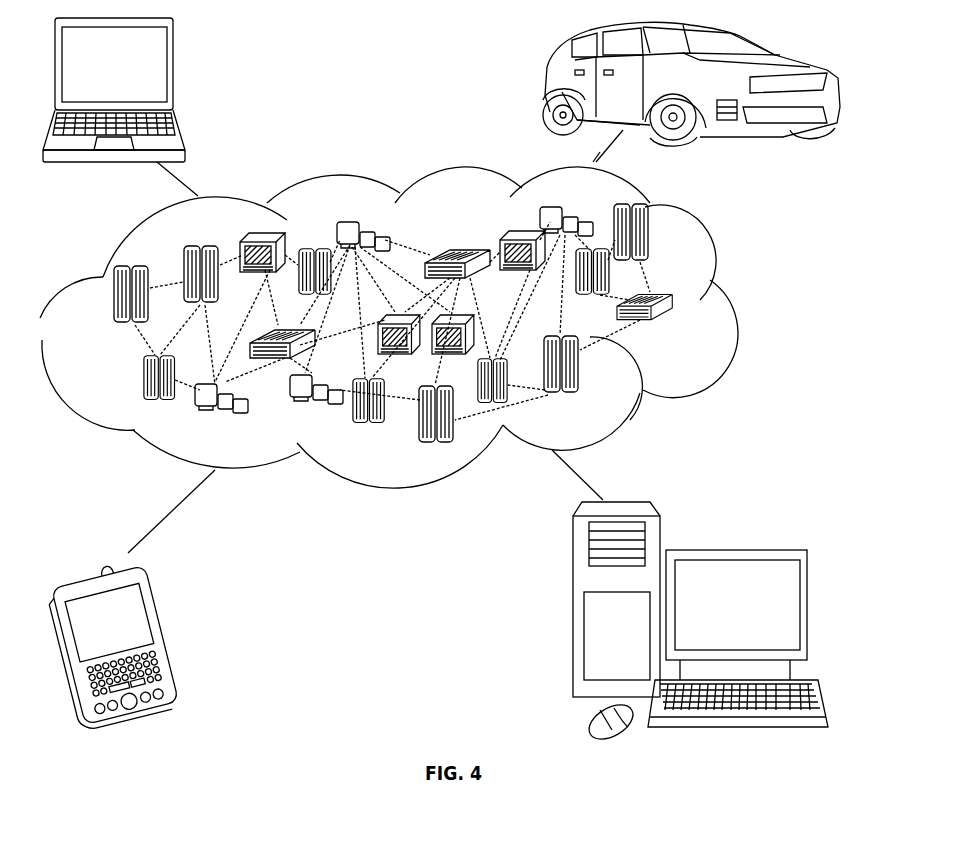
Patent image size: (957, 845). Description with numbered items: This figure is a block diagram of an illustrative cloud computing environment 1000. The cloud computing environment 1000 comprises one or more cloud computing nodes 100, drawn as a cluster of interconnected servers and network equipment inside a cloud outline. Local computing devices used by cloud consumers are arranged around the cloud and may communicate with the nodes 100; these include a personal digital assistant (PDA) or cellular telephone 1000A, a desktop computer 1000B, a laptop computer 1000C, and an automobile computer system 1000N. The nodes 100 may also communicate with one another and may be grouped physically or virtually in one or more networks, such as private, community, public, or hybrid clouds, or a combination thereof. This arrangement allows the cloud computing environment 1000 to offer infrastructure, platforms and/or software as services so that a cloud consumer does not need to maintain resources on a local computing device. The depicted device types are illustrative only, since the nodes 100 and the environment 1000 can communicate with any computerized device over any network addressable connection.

The cloud computing environment 1000 is at (738, 304).
The cloud computing nodes 100 is at (684, 331).
The personal digital assistant (PDA) or cellular telephone 1000A is at (165, 638).
The desktop computer 1000B is at (733, 548).
The laptop computer 1000C is at (173, 72).
The automobile computer system 1000N is at (548, 86).